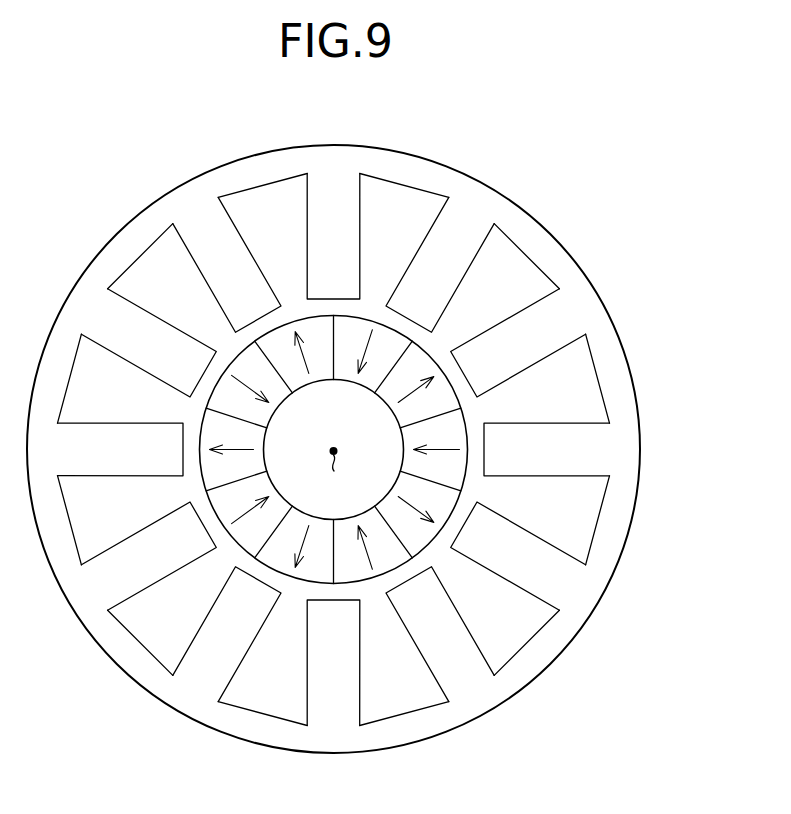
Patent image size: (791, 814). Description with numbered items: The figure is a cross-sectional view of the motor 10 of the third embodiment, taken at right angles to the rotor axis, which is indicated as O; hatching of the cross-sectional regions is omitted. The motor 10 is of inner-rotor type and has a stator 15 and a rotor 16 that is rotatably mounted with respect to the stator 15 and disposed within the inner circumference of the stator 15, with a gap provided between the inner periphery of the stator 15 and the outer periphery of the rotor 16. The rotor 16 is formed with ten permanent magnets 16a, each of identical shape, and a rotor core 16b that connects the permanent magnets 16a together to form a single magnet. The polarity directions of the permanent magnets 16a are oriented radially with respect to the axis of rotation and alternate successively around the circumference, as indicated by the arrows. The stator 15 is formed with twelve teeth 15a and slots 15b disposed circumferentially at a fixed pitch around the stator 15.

The motor 10 is at (643, 112).
The stator 15 is at (367, 449).
The teeth 15a is at (538, 563).
The slots 15b is at (583, 521).
The rotor 16 is at (460, 393).
The permanent magnets 16a is at (448, 431).
The rotor core 16b is at (375, 480).